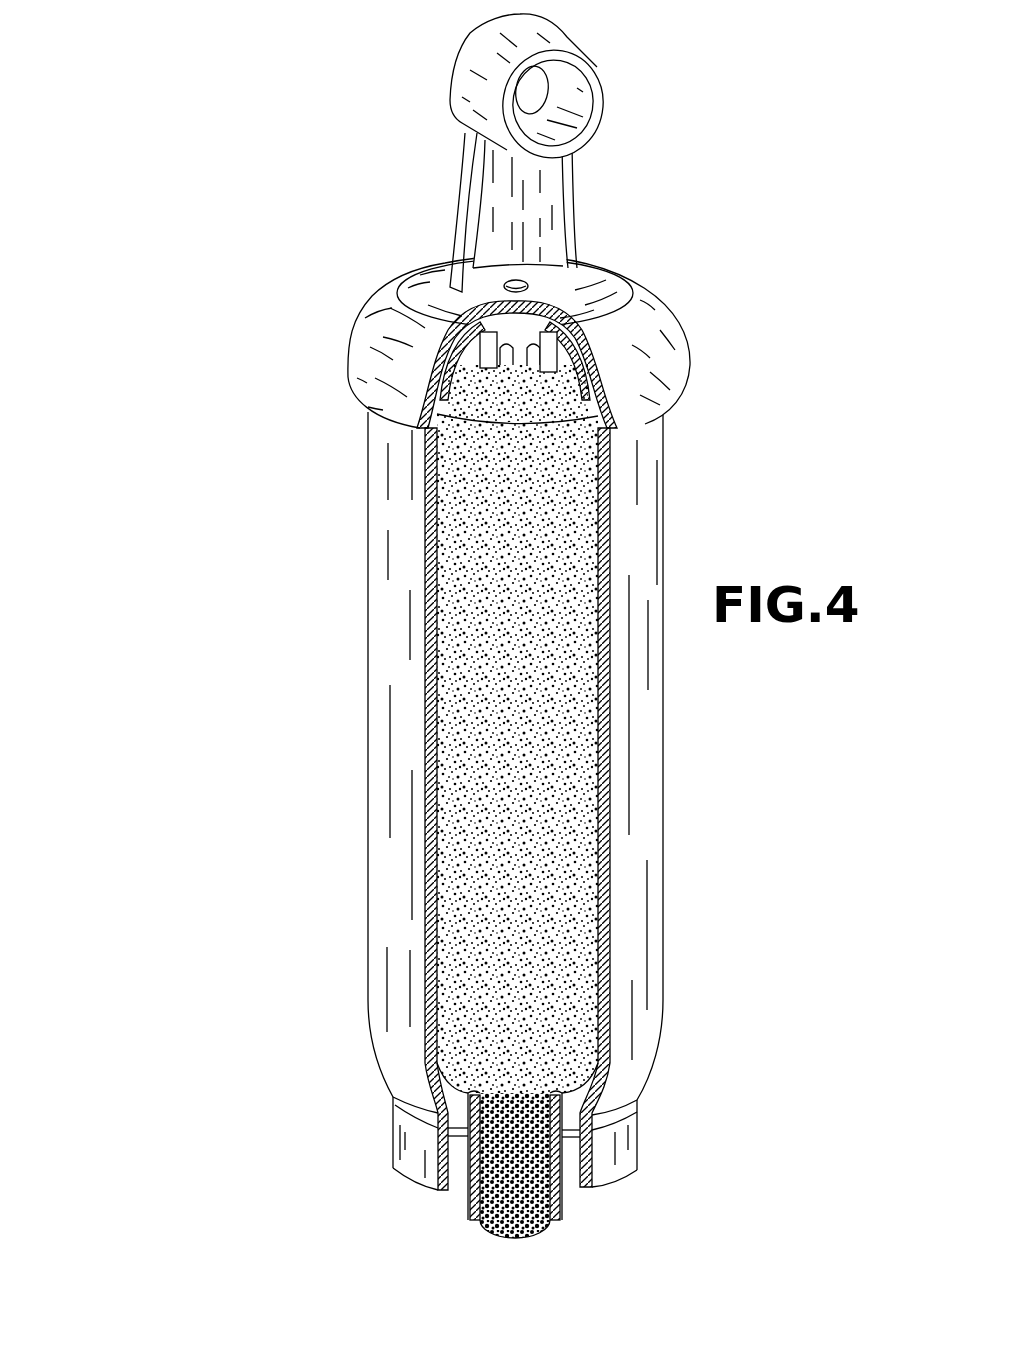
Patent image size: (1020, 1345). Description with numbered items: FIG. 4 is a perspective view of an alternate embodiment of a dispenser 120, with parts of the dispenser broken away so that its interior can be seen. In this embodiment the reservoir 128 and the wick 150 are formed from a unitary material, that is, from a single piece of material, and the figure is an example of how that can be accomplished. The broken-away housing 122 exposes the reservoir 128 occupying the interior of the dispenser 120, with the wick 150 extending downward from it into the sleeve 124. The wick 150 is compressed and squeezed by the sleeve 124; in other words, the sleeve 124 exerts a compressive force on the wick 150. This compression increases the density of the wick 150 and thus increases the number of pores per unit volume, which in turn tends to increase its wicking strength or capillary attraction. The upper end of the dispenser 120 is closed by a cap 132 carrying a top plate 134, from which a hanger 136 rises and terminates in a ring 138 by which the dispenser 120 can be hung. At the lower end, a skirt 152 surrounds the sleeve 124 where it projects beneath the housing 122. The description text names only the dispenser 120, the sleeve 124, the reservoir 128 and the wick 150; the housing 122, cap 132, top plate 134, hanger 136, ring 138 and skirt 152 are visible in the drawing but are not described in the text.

The dispenser 120 is at (295, 720).
The housing 122 is at (385, 630).
The sleeve 124 is at (467, 1200).
The reservoir 128 is at (540, 877).
The cap 132 is at (672, 360).
The top plate 134 is at (618, 285).
The hanger 136 is at (628, 193).
The hanger ring 138 is at (604, 72).
The wick 150 is at (524, 1238).
The skirt 152 is at (640, 1133).